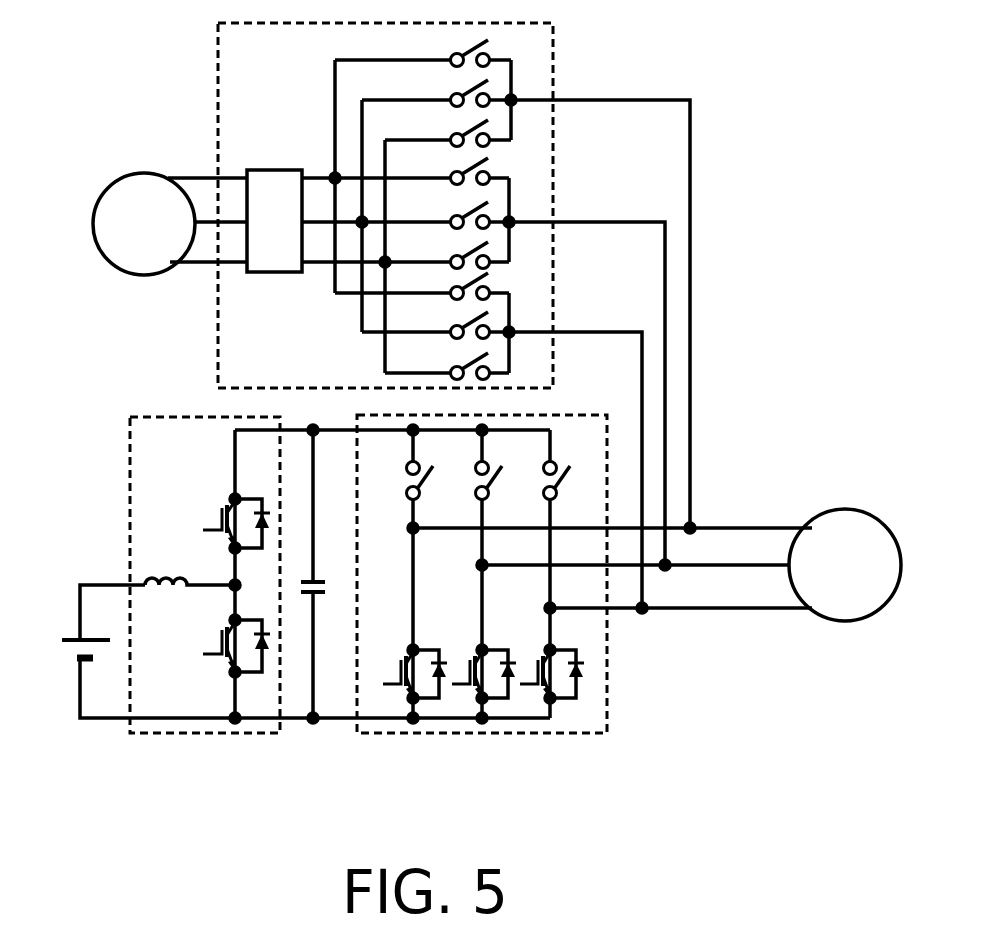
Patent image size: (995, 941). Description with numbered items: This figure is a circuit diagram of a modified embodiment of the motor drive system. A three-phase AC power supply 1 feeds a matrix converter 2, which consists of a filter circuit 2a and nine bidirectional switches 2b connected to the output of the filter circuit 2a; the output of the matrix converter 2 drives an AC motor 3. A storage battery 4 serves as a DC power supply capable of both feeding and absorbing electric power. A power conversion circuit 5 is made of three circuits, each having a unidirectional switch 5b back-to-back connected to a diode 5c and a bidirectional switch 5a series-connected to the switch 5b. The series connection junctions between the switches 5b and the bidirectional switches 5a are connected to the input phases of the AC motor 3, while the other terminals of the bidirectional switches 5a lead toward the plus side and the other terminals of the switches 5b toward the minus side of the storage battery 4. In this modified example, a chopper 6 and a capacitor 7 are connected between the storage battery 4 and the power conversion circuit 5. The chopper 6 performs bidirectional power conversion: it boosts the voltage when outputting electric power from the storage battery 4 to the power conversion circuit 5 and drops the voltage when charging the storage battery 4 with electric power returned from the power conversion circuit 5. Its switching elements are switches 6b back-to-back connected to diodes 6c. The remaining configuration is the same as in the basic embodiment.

The three-phase AC power supply 1 is at (170, 224).
The matrix converter 2 is at (385, 205).
The filter circuit 2a is at (316, 221).
The bidirectional switches 2b is at (512, 323).
The AC motor 3 is at (657, 565).
The storage battery 4 is at (135, 651).
The power conversion circuit 5 is at (482, 574).
The bidirectional switches 5a is at (476, 540).
The unidirectional switches 5b is at (468, 676).
The diodes 5c is at (498, 658).
The chopper 6 is at (221, 575).
The switches 6b is at (221, 577).
The diodes 6c is at (253, 569).
The capacitor 7 is at (392, 574).